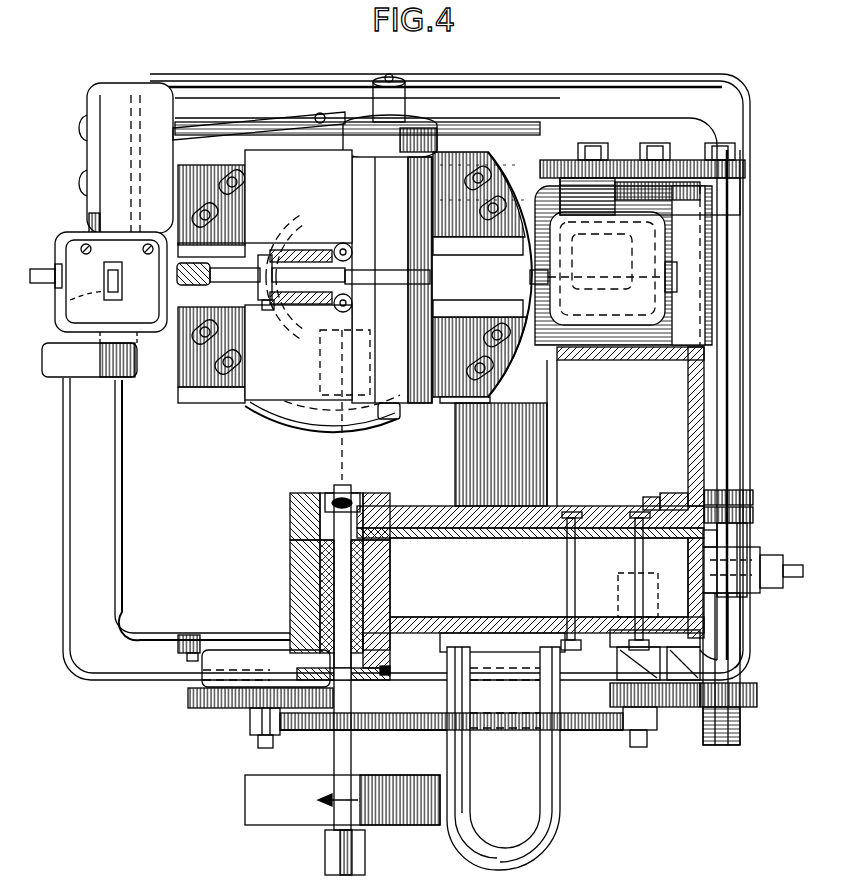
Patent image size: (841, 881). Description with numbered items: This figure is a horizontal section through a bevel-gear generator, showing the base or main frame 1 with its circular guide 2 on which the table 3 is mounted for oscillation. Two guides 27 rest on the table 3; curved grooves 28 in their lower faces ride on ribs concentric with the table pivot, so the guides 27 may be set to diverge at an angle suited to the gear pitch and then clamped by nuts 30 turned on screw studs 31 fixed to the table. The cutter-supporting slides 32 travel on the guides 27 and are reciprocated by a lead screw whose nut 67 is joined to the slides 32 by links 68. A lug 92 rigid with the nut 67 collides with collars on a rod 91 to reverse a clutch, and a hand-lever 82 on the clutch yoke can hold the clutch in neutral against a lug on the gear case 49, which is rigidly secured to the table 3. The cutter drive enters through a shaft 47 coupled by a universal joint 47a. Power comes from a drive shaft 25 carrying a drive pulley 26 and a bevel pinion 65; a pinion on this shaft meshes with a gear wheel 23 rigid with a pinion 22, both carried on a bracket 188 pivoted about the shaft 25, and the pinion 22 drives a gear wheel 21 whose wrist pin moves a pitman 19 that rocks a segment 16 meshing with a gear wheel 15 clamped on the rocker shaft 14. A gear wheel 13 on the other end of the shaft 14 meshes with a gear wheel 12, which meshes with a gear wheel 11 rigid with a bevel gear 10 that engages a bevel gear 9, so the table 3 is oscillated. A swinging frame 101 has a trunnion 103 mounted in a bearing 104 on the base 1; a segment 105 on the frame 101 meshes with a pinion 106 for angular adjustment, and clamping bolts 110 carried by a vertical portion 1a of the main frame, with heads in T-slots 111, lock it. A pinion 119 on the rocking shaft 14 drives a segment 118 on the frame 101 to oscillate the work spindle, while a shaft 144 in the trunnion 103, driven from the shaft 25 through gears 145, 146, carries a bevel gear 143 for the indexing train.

The base or main frame 1 is at (406, 472).
The vertical portion of the main frame 1a is at (432, 615).
The circular guide 2 is at (303, 427).
The table 3 is at (21, 290).
The bevel gear 9 is at (645, 250).
The bevel gear 10 is at (549, 198).
The gear wheel 11 is at (562, 178).
The gear wheel 12 is at (626, 178).
The gear wheel 13 is at (745, 168).
The rocker shaft 14 is at (718, 405).
The gear wheel 15 is at (757, 693).
The gear segment 16 is at (610, 692).
The pitman 19 is at (458, 732).
The gear wheel 21 is at (190, 702).
The pinion 22 is at (258, 712).
The gear wheel 23 is at (222, 700).
The drive shaft 25 is at (352, 490).
The drive pulley 26 is at (245, 800).
The guides 27 is at (197, 165).
The grooves 28 is at (300, 221).
The nuts 30 is at (477, 170).
The screw studs 31 is at (493, 203).
The cutter-supporting slides 32 is at (242, 425).
The shaft 47 is at (232, 118).
The universal joint 47a is at (320, 112).
The gear case 49 is at (108, 217).
The bevel pinion 65 is at (332, 362).
The nut 67 is at (256, 291).
The links 68 is at (332, 250).
The hand-lever 82 is at (122, 290).
The rod 91 is at (238, 270).
The lug 92 is at (272, 308).
The frame 101 is at (705, 440).
The trunnion 103 is at (292, 576).
The bearing 104 is at (292, 546).
The curved rack or spur-gear segment 105 is at (676, 540).
The pinion 106 is at (753, 516).
The clamping bolts 110 is at (636, 566).
The T-slots 111 is at (639, 512).
The curved rack or spur-gear segment 118 is at (672, 493).
The pinion 119 is at (753, 498).
The bevel gear 143 is at (330, 495).
The shaft 144 is at (368, 584).
The gear 145 is at (368, 681).
The gear 146 is at (392, 676).
The bracket 188 is at (192, 635).